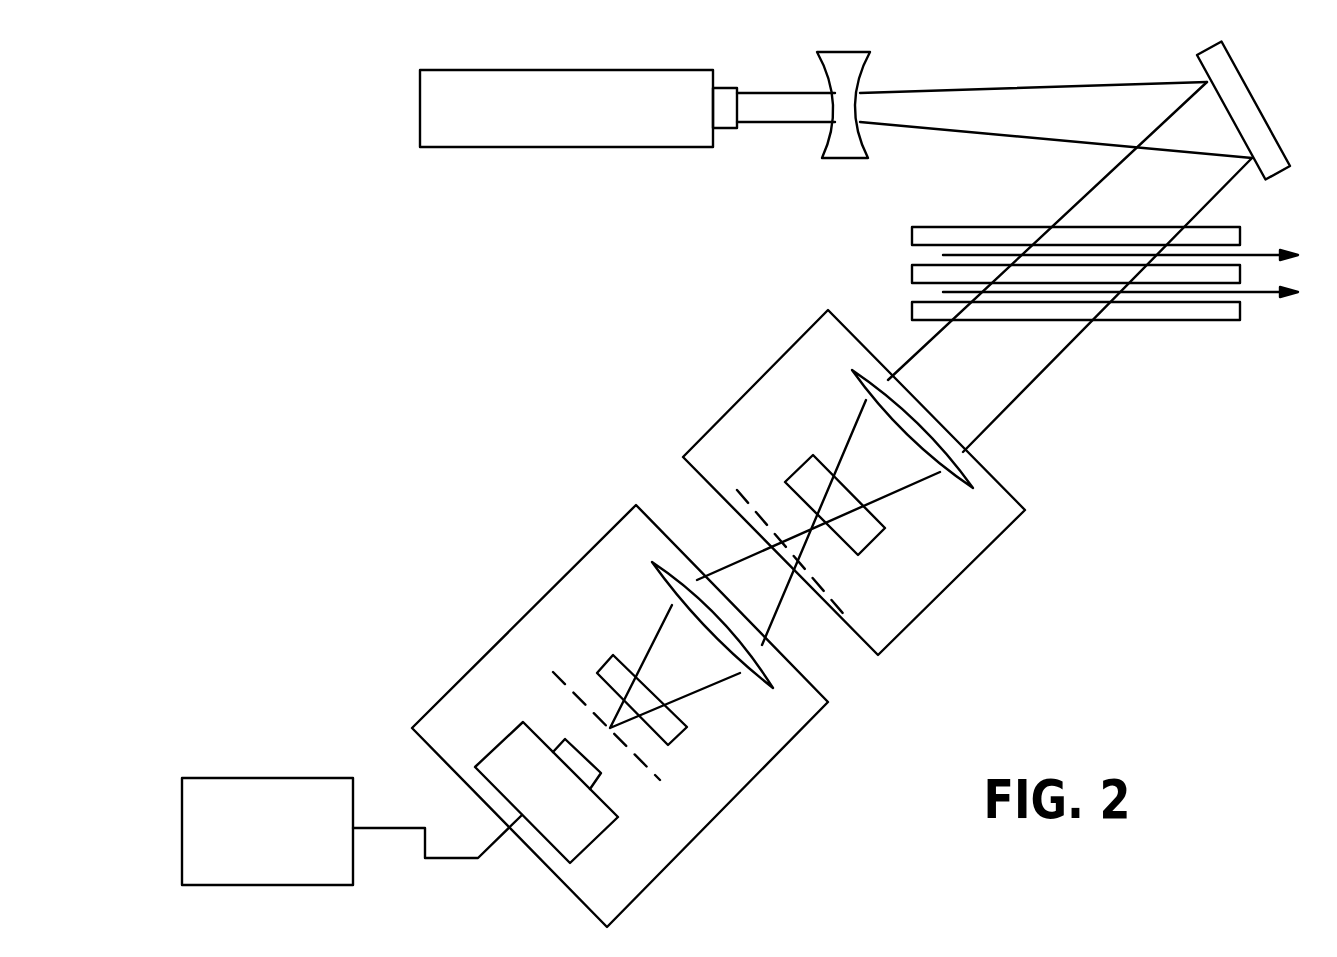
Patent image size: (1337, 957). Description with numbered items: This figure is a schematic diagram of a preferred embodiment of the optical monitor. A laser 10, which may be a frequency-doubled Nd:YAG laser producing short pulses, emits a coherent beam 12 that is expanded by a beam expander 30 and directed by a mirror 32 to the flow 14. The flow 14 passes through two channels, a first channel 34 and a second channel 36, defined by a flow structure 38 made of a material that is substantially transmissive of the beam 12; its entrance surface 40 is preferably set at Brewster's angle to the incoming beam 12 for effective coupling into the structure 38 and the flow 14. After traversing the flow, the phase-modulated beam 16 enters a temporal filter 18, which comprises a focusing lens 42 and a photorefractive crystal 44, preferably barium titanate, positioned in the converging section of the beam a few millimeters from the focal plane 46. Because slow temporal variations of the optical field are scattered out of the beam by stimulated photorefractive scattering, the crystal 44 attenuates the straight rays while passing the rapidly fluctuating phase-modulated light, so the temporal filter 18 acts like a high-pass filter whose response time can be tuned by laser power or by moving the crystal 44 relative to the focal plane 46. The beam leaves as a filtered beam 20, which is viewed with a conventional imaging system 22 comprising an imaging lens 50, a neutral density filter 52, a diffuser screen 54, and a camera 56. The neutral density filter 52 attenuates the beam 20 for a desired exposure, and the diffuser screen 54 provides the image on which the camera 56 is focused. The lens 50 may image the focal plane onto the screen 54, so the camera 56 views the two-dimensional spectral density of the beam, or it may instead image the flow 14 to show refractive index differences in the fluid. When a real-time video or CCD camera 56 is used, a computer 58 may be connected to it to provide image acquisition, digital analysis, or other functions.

The laser 10 is at (482, 148).
The coherent beam 12 is at (1038, 120).
The flow 14 is at (1268, 253).
The phase-modulated beam 16 is at (985, 402).
The temporal filter 18 is at (728, 412).
The filtered beam 20 is at (764, 600).
The imaging system 22 is at (540, 597).
The beam expander 30 is at (823, 148).
The mirror 32 is at (1273, 128).
The first channel 34 is at (926, 253).
The second channel 36 is at (926, 290).
The flow structure 38 is at (890, 241).
The entrance surface 40 is at (1134, 227).
The focusing lens 42 is at (860, 393).
The photorefractive crystal 44 is at (807, 457).
The focal plane 46 is at (744, 496).
The imaging lens 50 is at (662, 588).
The neutral density filter 52 is at (618, 655).
The diffuser screen 54 is at (560, 676).
The camera 56 is at (508, 733).
The computer 58 is at (270, 778).